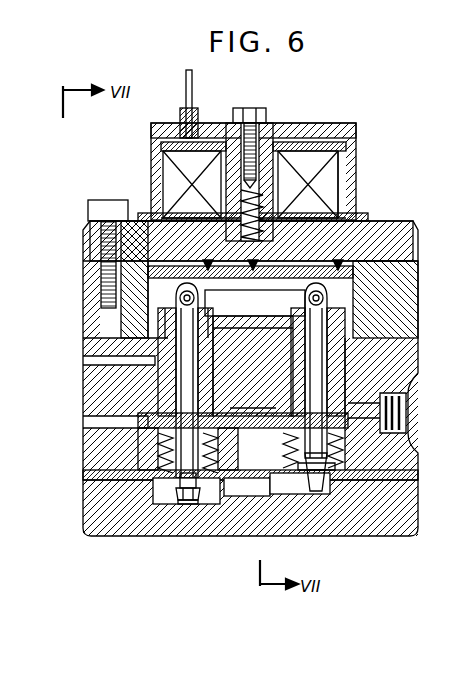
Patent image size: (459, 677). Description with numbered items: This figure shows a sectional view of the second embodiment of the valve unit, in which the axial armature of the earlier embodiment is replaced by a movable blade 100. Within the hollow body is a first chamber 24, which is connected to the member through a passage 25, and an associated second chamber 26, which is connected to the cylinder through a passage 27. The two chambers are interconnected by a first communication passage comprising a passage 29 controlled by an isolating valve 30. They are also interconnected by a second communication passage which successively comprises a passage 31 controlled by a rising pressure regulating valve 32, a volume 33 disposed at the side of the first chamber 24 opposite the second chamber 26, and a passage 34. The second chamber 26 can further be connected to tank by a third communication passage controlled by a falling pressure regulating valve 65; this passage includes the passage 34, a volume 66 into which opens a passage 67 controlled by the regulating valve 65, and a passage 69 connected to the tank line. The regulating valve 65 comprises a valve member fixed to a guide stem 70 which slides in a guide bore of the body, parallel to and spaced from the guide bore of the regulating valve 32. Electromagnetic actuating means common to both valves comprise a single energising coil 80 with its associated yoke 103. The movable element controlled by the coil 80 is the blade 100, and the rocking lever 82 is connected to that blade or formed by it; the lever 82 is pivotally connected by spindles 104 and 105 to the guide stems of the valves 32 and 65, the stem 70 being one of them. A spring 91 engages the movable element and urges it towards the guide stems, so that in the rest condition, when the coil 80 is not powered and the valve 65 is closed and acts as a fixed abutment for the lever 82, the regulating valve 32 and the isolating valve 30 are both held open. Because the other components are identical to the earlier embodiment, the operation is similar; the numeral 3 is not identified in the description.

The energising coil 80 is at (158, 165).
The rocking arm 82 is at (200, 222).
The spring 91 is at (265, 204).
The blade 100 is at (355, 232).
The yoke 103 is at (405, 230).
The spindle 104 is at (187, 290).
The spindle 105 is at (300, 290).
The second chamber 26 is at (343, 286).
The valve stem 3 is at (182, 315).
The guide stem 70 is at (293, 312).
The passage 29 is at (213, 340).
The isolating valve 30 is at (228, 410).
The passage 69 is at (352, 398).
The passage 27 is at (84, 355).
The passage 25 is at (84, 416).
The first chamber 24 is at (128, 428).
The volume 33 is at (147, 490).
The passage 31 is at (170, 492).
The rising pressure regulating valve 32 is at (185, 500).
The passage 34 is at (233, 482).
The passage 67 is at (300, 462).
The volume 66 is at (322, 462).
The falling pressure regulating valve 65 is at (310, 468).